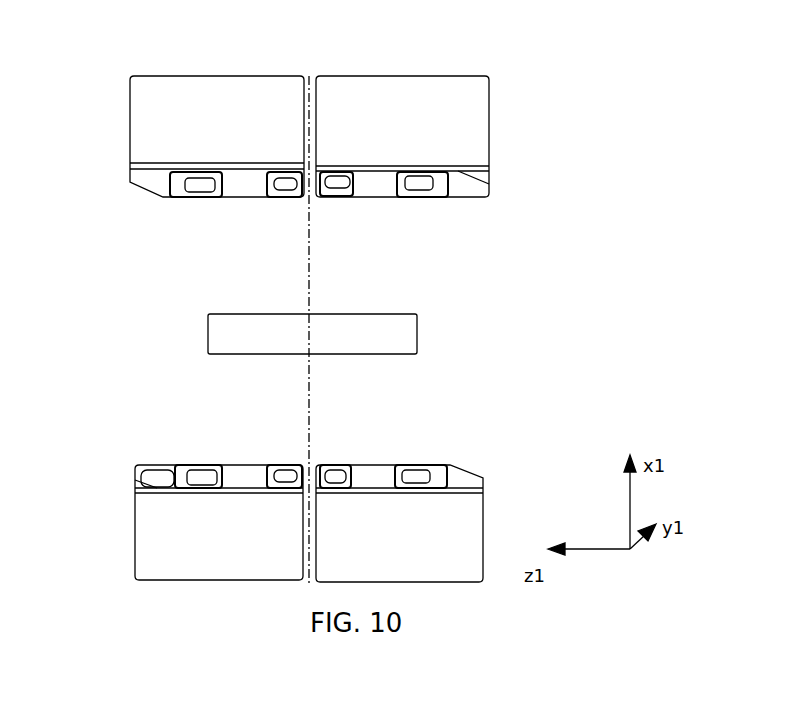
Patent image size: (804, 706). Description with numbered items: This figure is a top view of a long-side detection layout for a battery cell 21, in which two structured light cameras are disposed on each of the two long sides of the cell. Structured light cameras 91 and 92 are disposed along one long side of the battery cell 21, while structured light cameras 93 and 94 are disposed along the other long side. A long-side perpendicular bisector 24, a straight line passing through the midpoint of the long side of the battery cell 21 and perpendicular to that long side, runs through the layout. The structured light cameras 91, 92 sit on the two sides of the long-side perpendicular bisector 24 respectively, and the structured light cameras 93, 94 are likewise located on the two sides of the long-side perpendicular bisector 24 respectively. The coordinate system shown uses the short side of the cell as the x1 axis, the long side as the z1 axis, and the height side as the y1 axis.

The structured light camera 93 is at (130, 77).
The structured light camera 94 is at (318, 77).
The long-side perpendicular bisector 24 is at (309, 273).
The battery cell 21 is at (208, 313).
The structured light camera 91 is at (138, 465).
The structured light camera 92 is at (317, 465).